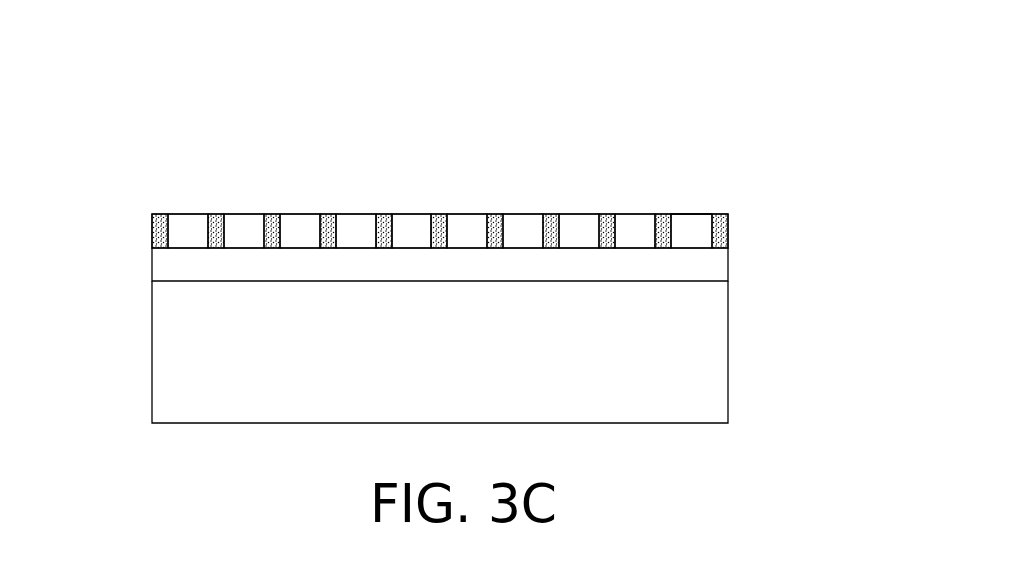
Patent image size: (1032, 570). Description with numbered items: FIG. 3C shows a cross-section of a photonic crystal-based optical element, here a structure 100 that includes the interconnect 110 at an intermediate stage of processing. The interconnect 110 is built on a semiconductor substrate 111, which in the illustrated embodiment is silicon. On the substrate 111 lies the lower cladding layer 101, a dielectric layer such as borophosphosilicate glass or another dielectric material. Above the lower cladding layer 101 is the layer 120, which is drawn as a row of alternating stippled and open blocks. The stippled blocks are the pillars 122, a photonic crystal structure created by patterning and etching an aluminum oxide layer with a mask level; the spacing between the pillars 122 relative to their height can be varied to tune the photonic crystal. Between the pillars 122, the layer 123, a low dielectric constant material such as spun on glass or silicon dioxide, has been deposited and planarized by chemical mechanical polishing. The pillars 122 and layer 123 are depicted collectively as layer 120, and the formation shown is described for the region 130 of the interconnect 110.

The semiconductor device 100 is at (767, 110).
The interconnect 110 is at (836, 227).
The lower cladding layer 101 is at (717, 267).
The semiconductor substrate 111 is at (679, 380).
The layer 120 is at (128, 218).
The pillars 122 is at (719, 214).
The layer 123 is at (182, 220).
The region 130 is at (696, 193).